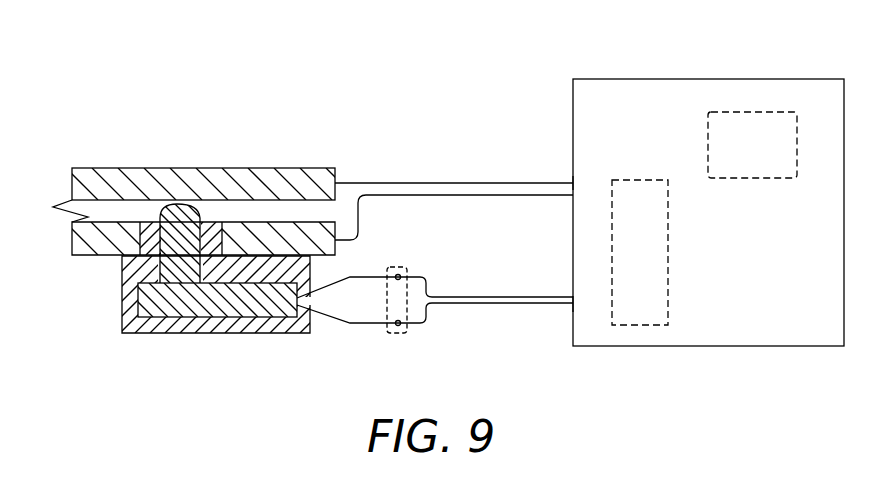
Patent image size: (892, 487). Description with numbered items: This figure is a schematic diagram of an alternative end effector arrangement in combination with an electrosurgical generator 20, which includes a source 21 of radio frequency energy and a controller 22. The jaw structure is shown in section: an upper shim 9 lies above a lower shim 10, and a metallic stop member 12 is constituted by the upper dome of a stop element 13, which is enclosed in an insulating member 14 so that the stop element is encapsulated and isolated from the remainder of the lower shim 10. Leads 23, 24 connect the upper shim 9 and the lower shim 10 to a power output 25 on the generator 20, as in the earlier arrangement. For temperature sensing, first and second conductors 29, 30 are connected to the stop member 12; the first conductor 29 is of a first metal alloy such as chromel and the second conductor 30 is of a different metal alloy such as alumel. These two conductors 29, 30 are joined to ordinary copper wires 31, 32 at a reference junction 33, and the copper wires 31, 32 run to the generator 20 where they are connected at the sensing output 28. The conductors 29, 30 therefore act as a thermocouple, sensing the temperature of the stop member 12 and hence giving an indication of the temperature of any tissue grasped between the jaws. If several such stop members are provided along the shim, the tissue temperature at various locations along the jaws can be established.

The upper shim 9 is at (283, 168).
The lower shim 10 is at (73, 246).
The stop member 12 is at (178, 206).
The stop element 13 is at (262, 310).
The insulating member 14 is at (124, 306).
The electrosurgical generator 20 is at (594, 79).
The source of radio frequency energy 21 is at (776, 112).
The controller 22 is at (668, 305).
The lead 23 is at (448, 183).
The lead 24 is at (450, 196).
The power output 25 is at (573, 182).
The sensing output 28 is at (573, 306).
The first conductor 29 is at (326, 290).
The second conductor 30 is at (335, 319).
The copper wire 31 is at (491, 297).
The copper wire 32 is at (468, 304).
The reference junction 33 is at (395, 337).